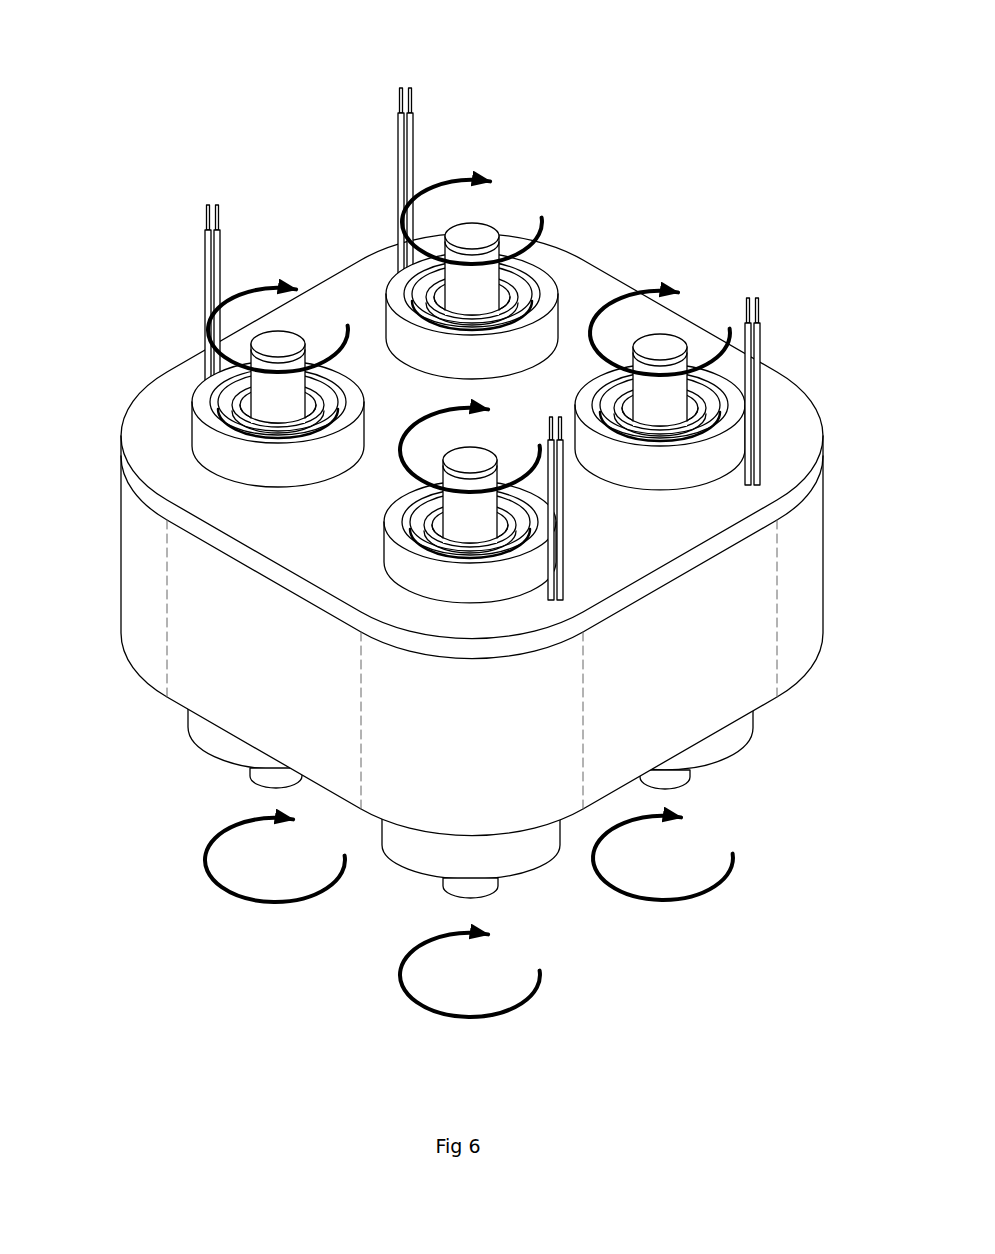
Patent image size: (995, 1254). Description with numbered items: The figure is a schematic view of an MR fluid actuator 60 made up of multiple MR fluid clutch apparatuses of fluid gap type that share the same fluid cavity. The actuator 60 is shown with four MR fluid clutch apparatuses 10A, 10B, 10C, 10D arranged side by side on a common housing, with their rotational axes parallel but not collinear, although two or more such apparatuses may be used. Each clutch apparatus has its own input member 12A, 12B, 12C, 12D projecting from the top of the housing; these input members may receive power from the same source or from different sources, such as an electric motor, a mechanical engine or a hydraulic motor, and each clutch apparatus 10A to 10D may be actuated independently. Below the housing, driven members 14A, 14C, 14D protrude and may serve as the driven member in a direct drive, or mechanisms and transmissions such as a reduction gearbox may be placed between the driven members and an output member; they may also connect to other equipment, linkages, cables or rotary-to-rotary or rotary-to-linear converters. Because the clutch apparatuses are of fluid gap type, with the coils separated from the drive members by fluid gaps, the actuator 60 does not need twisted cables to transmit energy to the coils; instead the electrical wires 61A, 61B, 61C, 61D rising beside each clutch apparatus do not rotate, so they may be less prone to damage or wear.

The MR fluid actuator 60 is at (601, 84).
The MR fluid clutch apparatus 10A is at (190, 378).
The MR fluid clutch apparatus 10B is at (383, 268).
The MR fluid clutch apparatus 10C is at (380, 533).
The MR fluid clutch apparatus 10D is at (690, 294).
The input member 12A is at (267, 345).
The input member 12B is at (462, 236).
The input member 12C is at (448, 477).
The input member 12D is at (675, 332).
The driven member 14A is at (248, 780).
The driven member 14C is at (457, 893).
The driven member 14D is at (690, 785).
The electrical wire 61A is at (209, 199).
The electrical wire 61B is at (415, 84).
The electrical wire 61C is at (547, 456).
The electrical wire 61D is at (761, 336).